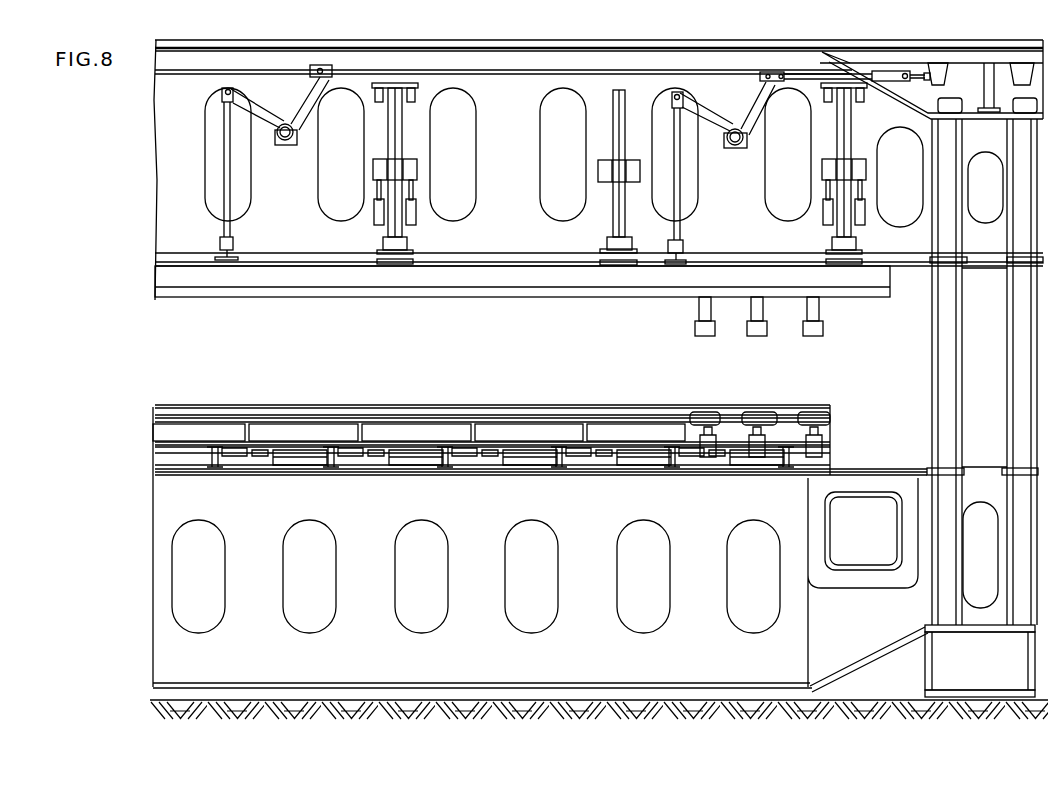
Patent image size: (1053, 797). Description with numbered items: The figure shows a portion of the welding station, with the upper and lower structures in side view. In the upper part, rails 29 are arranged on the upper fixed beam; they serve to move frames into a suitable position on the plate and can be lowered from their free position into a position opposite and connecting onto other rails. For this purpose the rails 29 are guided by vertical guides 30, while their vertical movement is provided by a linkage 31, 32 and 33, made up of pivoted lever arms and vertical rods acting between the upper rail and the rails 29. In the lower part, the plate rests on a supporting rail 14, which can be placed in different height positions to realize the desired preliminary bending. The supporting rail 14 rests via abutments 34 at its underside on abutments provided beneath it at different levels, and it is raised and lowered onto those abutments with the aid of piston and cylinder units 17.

The supporting rail 14 is at (481, 420).
The piston and cylinder units 17 is at (298, 449).
The rails 29 is at (497, 283).
The vertical guides 30 is at (393, 113).
The linkage 31 is at (260, 112).
The linkage 32 is at (231, 188).
The linkage 33 is at (528, 76).
The abutments 34 is at (248, 450).